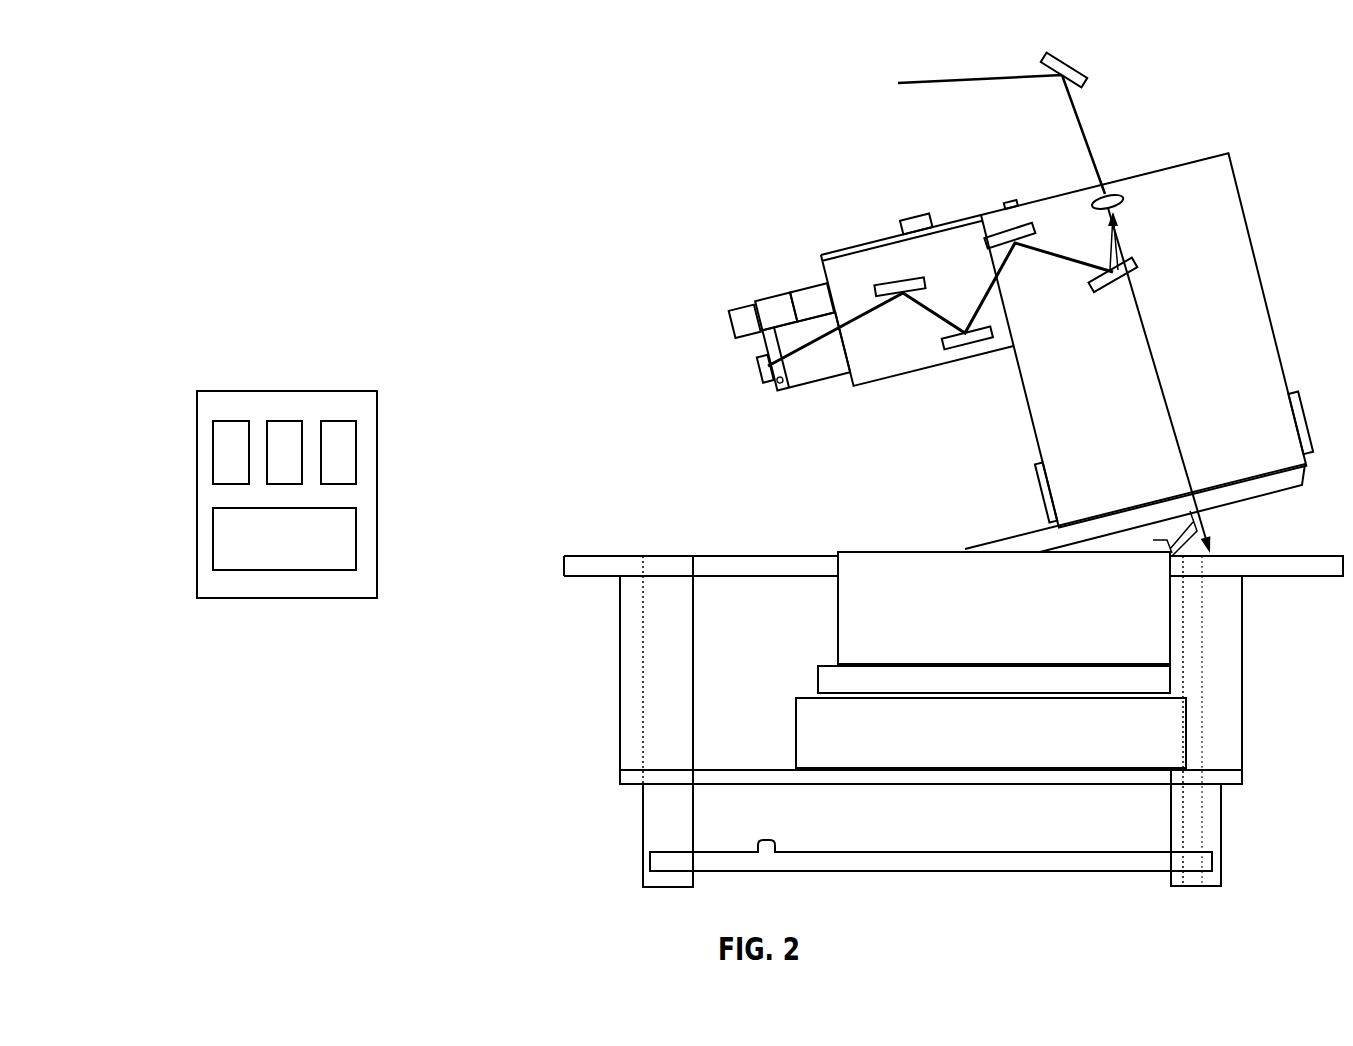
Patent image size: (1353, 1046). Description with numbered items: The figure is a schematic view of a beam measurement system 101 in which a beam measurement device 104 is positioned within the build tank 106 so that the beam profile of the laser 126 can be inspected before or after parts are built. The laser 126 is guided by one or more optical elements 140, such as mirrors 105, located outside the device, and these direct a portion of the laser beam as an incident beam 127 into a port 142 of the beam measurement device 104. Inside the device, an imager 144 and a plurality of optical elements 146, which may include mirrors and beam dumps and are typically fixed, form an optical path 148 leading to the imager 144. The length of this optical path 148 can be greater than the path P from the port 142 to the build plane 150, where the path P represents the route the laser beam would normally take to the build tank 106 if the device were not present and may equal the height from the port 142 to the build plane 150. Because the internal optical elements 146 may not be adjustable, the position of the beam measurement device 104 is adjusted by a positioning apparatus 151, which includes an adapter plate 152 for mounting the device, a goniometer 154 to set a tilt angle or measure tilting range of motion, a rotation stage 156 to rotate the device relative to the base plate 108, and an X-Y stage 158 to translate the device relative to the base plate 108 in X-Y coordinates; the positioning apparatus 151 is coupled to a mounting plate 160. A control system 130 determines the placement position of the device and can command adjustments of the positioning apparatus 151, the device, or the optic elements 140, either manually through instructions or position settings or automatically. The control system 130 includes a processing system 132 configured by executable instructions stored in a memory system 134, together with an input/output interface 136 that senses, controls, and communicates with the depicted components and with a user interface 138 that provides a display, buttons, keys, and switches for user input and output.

The beam measurement system 101 is at (561, 183).
The beam measurement device 104 is at (1243, 187).
The mirrors 105 is at (1075, 65).
The build tank 106 is at (1233, 653).
The base plate 108 is at (912, 780).
The laser 126 is at (958, 82).
The incident beam 127 is at (995, 293).
The control system 130 is at (278, 598).
The processing system 132 is at (230, 421).
The memory system 134 is at (283, 421).
The input/output interface 136 is at (337, 421).
The user interface 138 is at (309, 552).
The optical elements 140 is at (1249, 79).
The port 142 is at (1112, 194).
The imager 144 is at (758, 372).
The optical elements 146 is at (1013, 228).
The optical path 148 is at (812, 366).
The build plane 150 is at (589, 546).
The positioning apparatus 151 is at (1197, 739).
The adapter plate 152 is at (980, 530).
The goniometer 154 is at (836, 566).
The rotation stage 156 is at (816, 687).
The X-Y stage 158 is at (795, 733).
The mounting plate 160 is at (709, 802).
The path P is at (1162, 388).